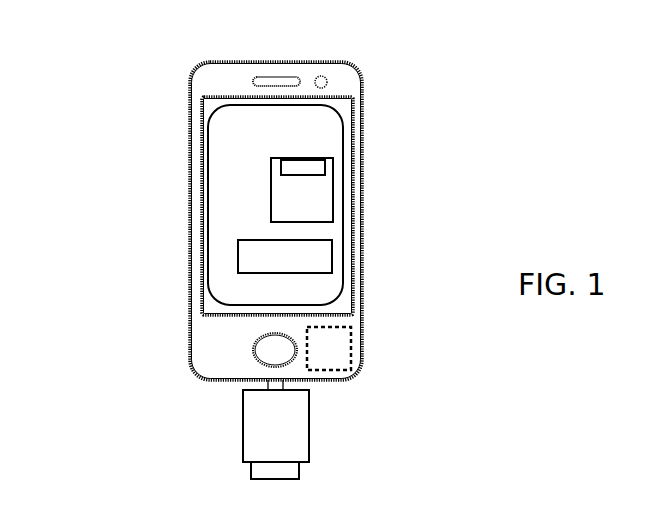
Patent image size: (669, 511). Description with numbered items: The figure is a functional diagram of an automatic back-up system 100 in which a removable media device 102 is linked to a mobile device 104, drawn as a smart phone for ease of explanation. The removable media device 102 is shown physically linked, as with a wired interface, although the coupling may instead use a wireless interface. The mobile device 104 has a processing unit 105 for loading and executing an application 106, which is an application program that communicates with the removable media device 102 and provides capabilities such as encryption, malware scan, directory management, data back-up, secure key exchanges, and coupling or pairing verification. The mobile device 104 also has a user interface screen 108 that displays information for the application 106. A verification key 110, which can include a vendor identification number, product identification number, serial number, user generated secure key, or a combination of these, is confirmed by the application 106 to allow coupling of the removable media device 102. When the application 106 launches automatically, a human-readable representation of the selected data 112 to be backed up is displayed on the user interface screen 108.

The automatic back-up system 100 is at (136, 38).
The removable media device 102 is at (287, 447).
The mobile device 104 is at (190, 152).
The processing unit 105 is at (337, 362).
The application 106 is at (325, 208).
The user interface screen 108 is at (227, 282).
The verification key 110 is at (315, 168).
The selected data 112 is at (302, 270).